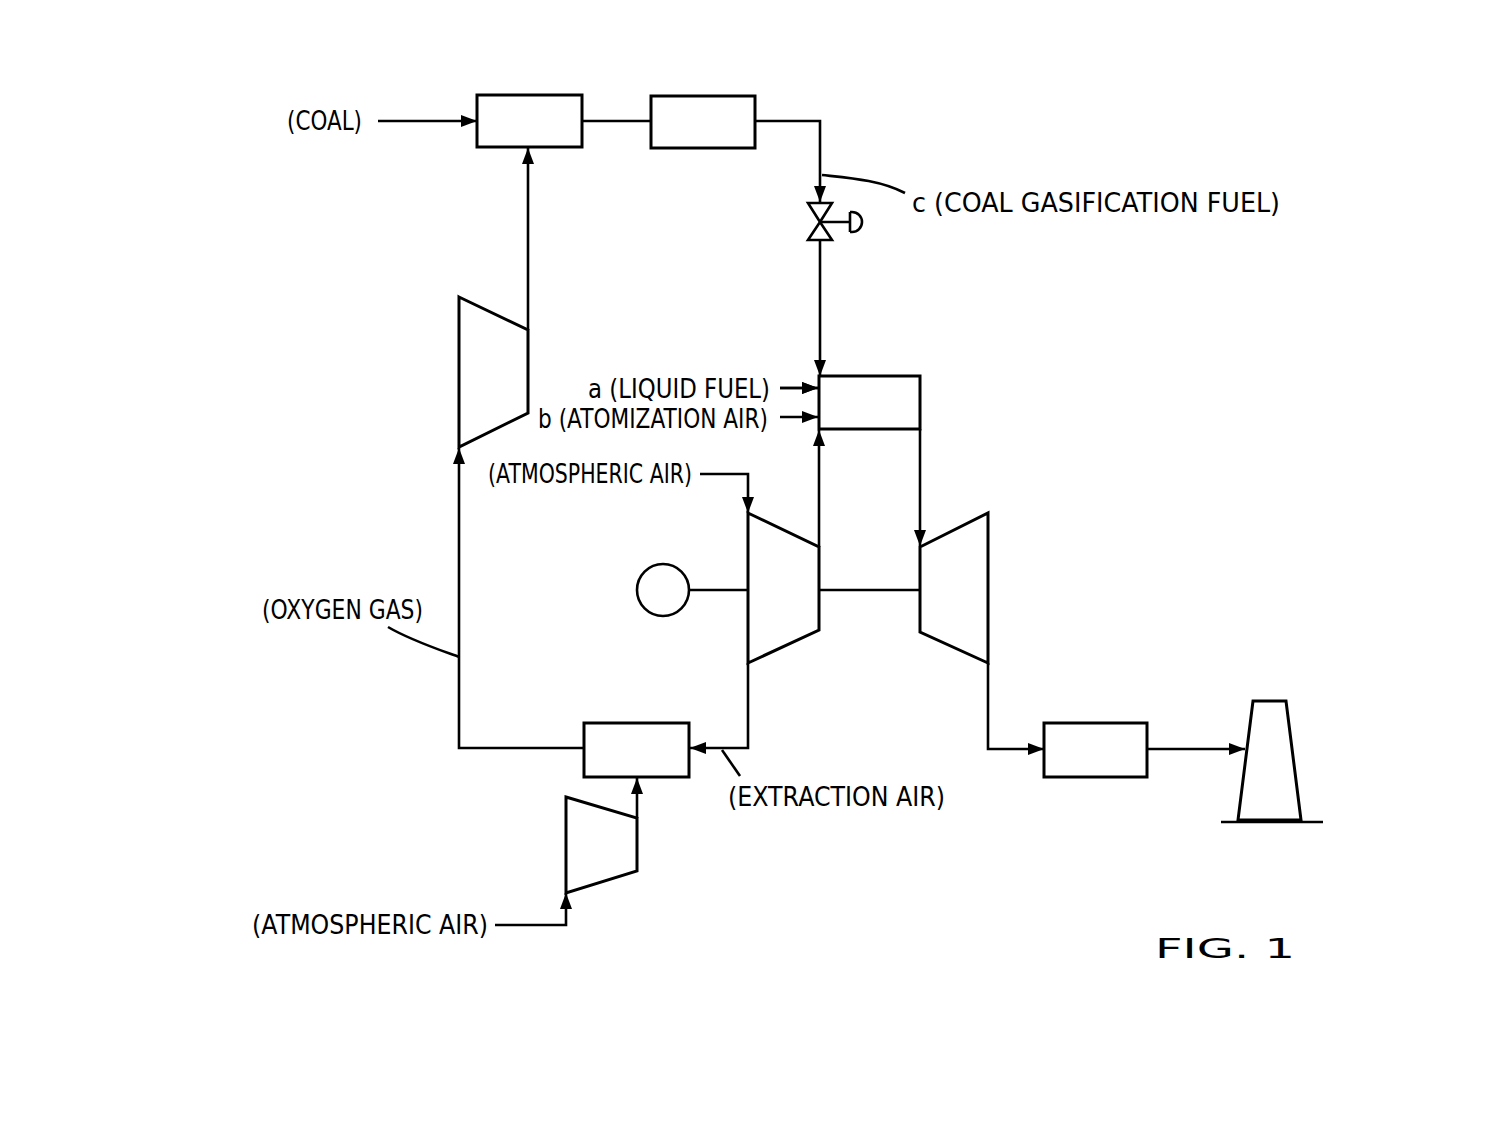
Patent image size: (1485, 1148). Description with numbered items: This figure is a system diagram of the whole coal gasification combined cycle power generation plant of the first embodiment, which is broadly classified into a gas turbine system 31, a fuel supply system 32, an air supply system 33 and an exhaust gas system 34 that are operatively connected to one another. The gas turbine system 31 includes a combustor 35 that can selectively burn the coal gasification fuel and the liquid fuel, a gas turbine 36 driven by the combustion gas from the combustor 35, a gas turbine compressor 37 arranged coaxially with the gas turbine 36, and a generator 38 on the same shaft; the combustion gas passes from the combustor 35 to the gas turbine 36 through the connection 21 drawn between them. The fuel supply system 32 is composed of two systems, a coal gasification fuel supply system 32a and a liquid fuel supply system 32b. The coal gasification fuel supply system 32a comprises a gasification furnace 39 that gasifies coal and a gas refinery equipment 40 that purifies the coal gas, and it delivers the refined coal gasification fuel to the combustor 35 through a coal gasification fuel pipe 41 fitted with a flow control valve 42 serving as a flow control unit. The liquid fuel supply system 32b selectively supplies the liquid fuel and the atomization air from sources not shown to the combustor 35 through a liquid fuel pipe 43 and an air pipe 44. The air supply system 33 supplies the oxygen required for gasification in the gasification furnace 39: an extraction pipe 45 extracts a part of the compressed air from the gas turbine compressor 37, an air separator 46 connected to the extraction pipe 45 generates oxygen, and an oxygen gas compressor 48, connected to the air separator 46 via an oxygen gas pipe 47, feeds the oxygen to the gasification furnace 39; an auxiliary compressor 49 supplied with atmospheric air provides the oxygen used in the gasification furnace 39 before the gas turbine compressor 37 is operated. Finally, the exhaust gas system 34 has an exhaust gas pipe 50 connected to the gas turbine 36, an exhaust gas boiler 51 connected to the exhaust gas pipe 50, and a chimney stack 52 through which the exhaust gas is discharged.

The combustion gas line 21 is at (920, 485).
The gas turbine system 31 is at (925, 367).
The fuel supply system 32 is at (772, 97).
The coal gasification fuel supply system 32a is at (615, 108).
The liquid fuel supply system 32b is at (767, 372).
The air supply system 33 is at (452, 772).
The exhaust gas system 34 is at (1234, 607).
The combustor 35 is at (920, 412).
The gas turbine 36 is at (988, 587).
The gas turbine compressor 37 is at (790, 647).
The generator 38 is at (644, 574).
The gasification furnace 39 is at (487, 148).
The gas refinery equipment 40 is at (756, 112).
The coal gasification fuel pipe 41 is at (819, 283).
The flow control valve 42 is at (810, 215).
The liquid fuel pipe 43 is at (800, 383).
The air pipe 44 is at (795, 420).
The extraction pipe 45 is at (749, 707).
The air separator 46 is at (678, 775).
The oxygen gas pipe 47 is at (458, 702).
The oxygen gas compressor 48 is at (528, 365).
The auxiliary compressor 49 is at (628, 875).
The exhaust gas pipe 50 is at (988, 700).
The exhaust gas boiler 51 is at (1085, 777).
The chimney stack 52 is at (1291, 729).